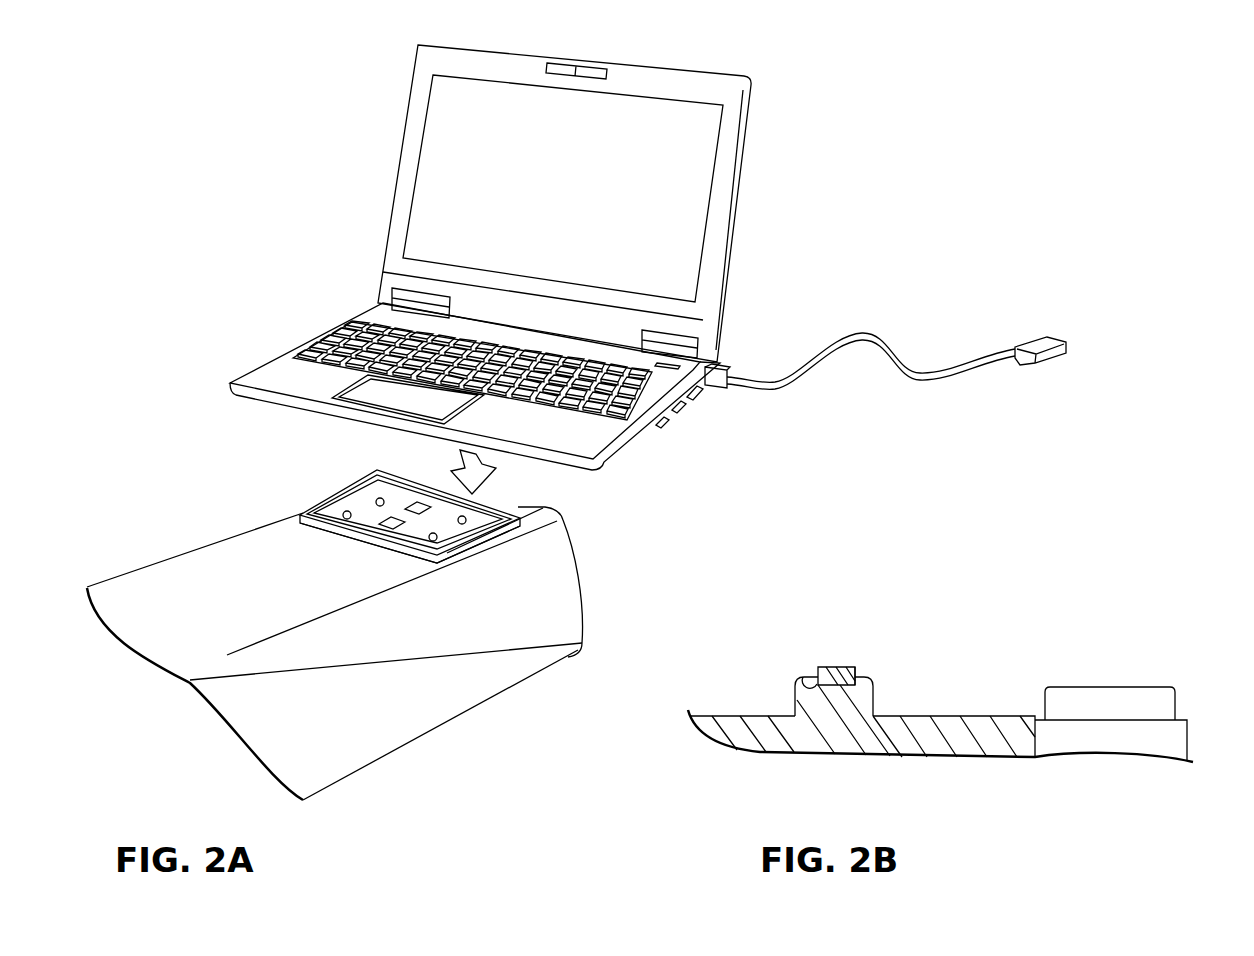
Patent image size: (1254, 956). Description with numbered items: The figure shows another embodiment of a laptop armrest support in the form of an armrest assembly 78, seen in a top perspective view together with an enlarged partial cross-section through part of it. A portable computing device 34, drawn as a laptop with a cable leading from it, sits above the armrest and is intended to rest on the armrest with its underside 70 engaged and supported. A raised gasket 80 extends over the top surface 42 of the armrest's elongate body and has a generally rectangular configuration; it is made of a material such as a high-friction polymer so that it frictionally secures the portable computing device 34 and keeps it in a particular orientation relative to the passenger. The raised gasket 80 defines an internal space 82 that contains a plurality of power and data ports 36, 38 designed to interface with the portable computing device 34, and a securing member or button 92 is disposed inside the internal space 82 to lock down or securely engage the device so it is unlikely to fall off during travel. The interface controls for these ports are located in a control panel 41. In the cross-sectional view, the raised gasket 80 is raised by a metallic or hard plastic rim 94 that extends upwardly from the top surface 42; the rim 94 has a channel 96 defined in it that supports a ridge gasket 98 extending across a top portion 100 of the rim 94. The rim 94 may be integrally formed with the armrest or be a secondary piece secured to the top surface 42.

In FIG. 2A, the portable computing device 34 is at (760, 228).
In FIG. 2A, the underside 70 is at (655, 428).
In FIG. 2A, the armrest assembly 78 is at (632, 540).
In FIG. 2B, the armrest assembly 78 is at (940, 655).
In FIG. 2A, the control panel 41 is at (353, 462).
In FIG. 2A, the power port 36 is at (355, 490).
In FIG. 2A, the data port 38 is at (308, 512).
In FIG. 2A, the raised gasket 80 is at (537, 502).
In FIG. 2B, the top surface 42 is at (727, 714).
In FIG. 2B, the rim 94 is at (792, 703).
In FIG. 2B, the channel 96 is at (810, 677).
In FIG. 2B, the ridge gasket 98 is at (858, 672).
In FIG. 2B, the top portion 100 is at (858, 682).
In FIG. 2B, the internal space 82 is at (980, 716).
In FIG. 2B, the securing member or button 92 is at (1085, 687).